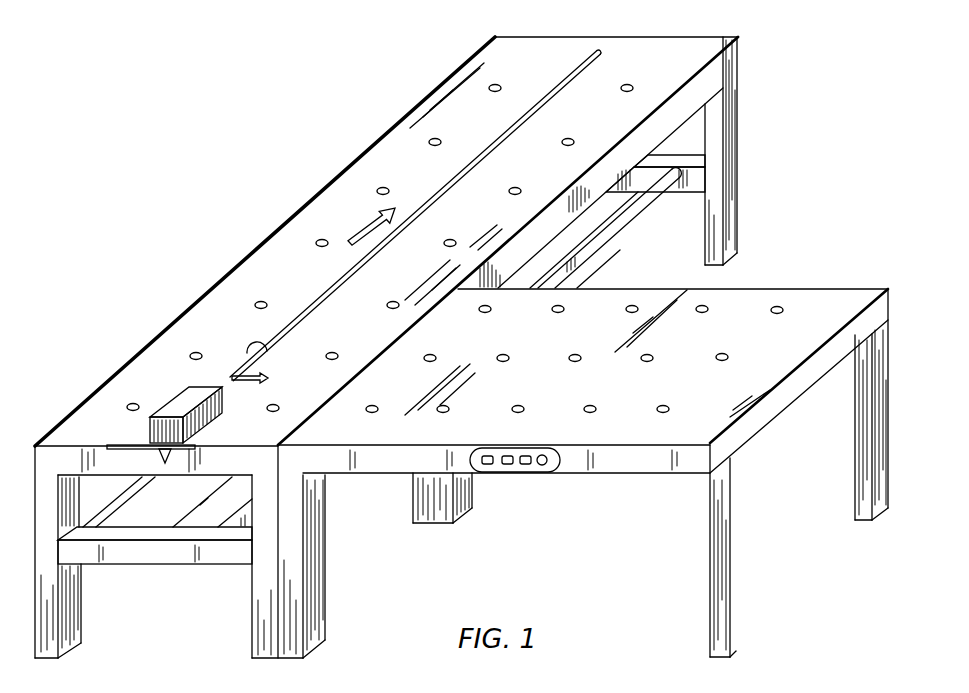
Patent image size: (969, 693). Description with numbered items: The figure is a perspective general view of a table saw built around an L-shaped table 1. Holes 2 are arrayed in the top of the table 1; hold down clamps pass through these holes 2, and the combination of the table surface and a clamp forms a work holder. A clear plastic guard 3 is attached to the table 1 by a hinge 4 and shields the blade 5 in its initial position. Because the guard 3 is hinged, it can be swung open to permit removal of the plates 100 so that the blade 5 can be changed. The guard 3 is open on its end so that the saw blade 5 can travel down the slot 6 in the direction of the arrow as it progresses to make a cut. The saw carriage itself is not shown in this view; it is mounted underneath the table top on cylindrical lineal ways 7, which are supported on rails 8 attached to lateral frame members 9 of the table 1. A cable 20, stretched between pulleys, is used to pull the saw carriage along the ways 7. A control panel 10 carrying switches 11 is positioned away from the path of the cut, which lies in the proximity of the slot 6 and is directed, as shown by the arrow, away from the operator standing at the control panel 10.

The table 1 is at (493, 63).
The holes 2 is at (378, 189).
The clear plastic guard 3 is at (180, 405).
The hinge 4 is at (162, 462).
The blade 5 is at (251, 340).
The slot 6 is at (563, 72).
The cylindrical lineal ways 7 is at (653, 193).
The rails 8 is at (602, 245).
The lateral frame members 9 is at (682, 160).
The control panel 10 is at (522, 446).
The switches 11 is at (542, 466).
The cable 20 is at (203, 503).
The plates 100 is at (268, 378).